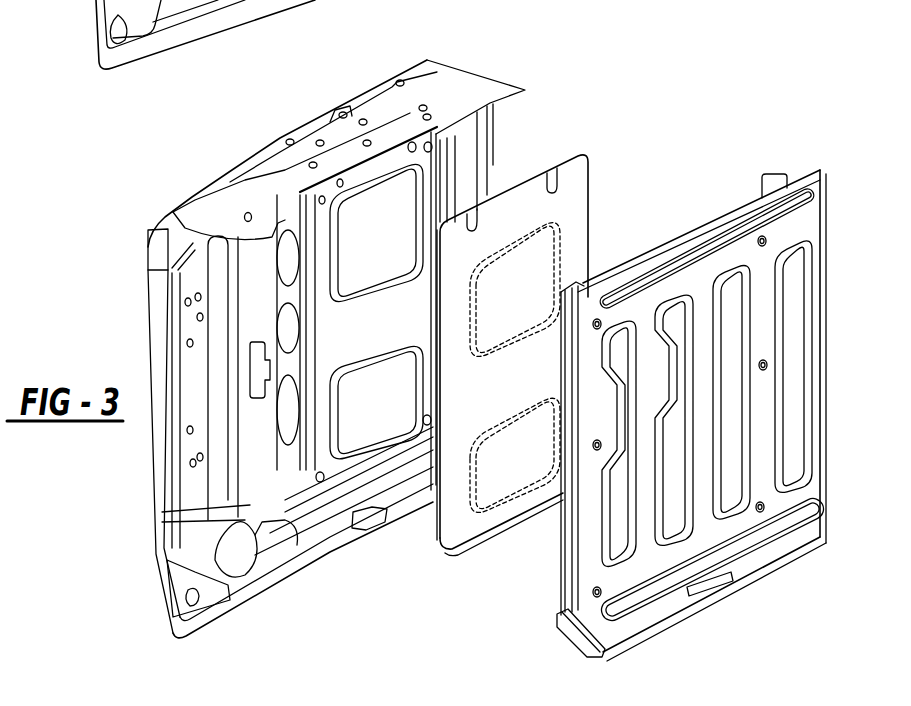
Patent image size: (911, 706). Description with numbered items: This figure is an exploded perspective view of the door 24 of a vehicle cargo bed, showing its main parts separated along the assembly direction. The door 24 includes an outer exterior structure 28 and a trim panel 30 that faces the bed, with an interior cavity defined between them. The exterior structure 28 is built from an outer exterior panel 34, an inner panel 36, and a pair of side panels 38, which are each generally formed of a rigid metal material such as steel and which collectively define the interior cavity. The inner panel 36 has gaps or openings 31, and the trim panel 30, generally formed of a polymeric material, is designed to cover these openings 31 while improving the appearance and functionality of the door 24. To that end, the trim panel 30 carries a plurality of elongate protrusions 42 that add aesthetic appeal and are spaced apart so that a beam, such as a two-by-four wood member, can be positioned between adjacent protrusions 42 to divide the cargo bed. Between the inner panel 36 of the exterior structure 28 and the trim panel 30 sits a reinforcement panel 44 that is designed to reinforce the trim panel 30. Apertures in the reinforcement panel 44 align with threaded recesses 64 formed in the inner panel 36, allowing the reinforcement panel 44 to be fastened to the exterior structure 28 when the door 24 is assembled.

The door 24 is at (634, 70).
The exterior structure 28 is at (257, 608).
The trim panel 30 is at (690, 593).
The openings 31 is at (420, 193).
The exterior panel 34 is at (197, 190).
The inner panel 36 is at (357, 510).
The side panels 38 is at (47, 0).
The elongate protrusions 42 is at (737, 327).
The reinforcement panel 44 is at (598, 200).
The threaded recesses 64 is at (313, 180).